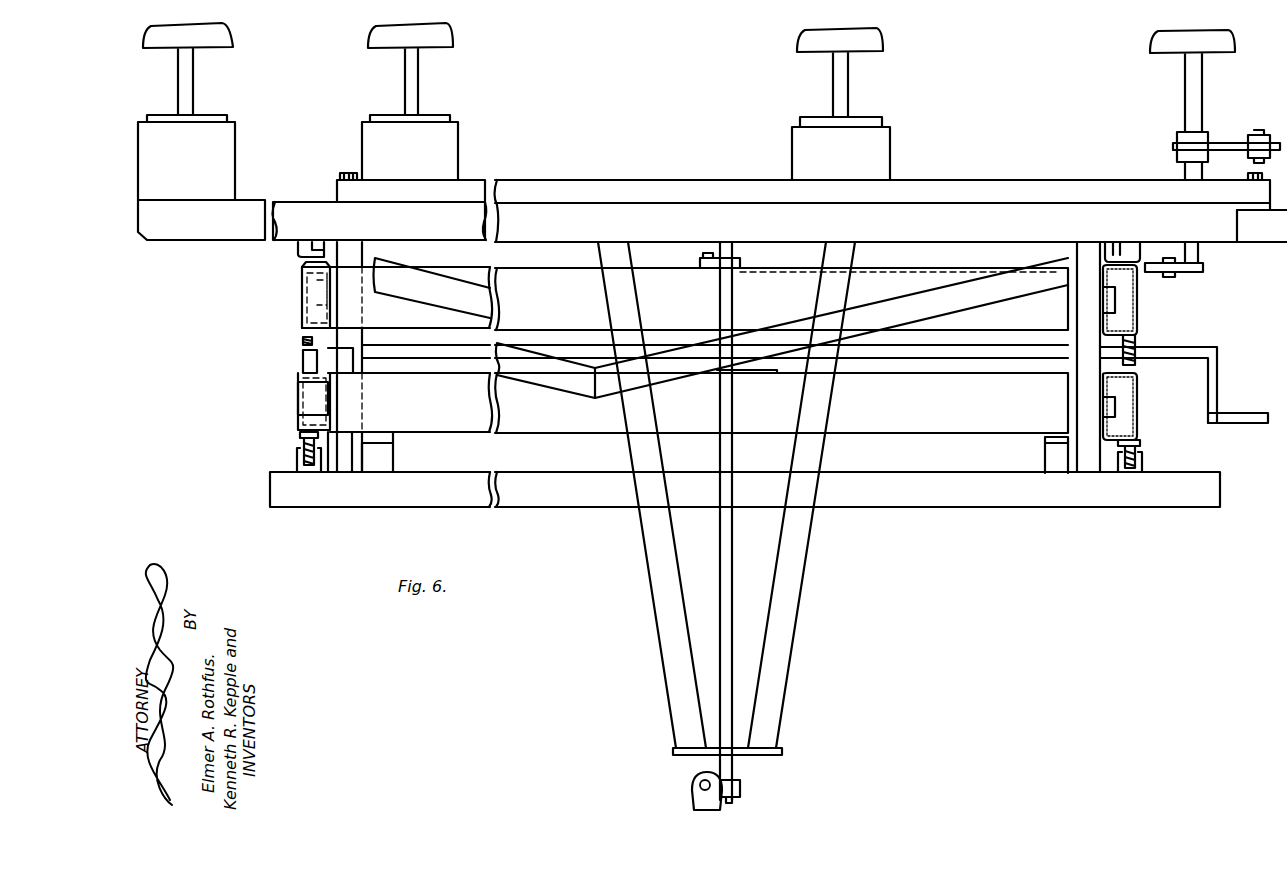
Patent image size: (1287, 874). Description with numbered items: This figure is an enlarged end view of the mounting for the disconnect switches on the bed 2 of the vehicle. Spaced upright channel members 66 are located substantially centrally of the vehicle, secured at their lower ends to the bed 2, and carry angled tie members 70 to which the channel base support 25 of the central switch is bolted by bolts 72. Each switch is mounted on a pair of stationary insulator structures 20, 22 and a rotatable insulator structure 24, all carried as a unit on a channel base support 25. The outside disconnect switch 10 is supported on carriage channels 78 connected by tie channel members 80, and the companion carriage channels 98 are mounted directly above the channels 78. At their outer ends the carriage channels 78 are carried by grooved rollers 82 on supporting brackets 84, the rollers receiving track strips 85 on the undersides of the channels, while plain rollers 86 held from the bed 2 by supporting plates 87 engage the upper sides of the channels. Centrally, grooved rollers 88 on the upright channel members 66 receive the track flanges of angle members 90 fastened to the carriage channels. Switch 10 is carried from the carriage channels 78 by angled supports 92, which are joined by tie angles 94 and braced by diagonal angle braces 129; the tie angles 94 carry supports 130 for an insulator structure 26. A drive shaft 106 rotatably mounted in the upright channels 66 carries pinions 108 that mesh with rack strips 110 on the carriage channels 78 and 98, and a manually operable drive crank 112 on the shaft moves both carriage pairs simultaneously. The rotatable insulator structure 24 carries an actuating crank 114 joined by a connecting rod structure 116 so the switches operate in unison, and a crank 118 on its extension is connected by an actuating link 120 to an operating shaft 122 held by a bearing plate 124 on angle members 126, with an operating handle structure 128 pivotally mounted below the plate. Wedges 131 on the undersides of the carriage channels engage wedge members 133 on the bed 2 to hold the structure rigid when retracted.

The bed 2 is at (276, 487).
The disconnect switch 10 is at (722, 116).
The stationary insulator structure 20 is at (452, 43).
The stationary insulator structure 22 is at (883, 45).
The rotatable insulator structure 24 is at (1234, 46).
The channel base support 25 is at (620, 168).
The insulator structure 26 is at (221, 42).
The upright channel member 66 is at (358, 249).
The angled tie member 70 is at (1010, 218).
The bolt 72 is at (347, 178).
The carriage channel 78 is at (300, 420).
The tie channel member 80 is at (548, 258).
The grooved roller 82 is at (303, 443).
The supporting bracket 84 is at (297, 459).
The track strip 85 is at (302, 436).
The plain roller 86 is at (303, 355).
The supporting plate 87 is at (342, 460).
The grooved roller 88 is at (301, 288).
The angle member 90 is at (302, 266).
The angled support 92 is at (296, 251).
The tie angle 94 is at (306, 190).
The carriage channel 98 is at (302, 316).
The drive shaft 106 is at (912, 352).
The pinion 108 is at (1135, 355).
The rack strip 110 is at (1133, 338).
The drive crank 112 is at (1235, 418).
The actuating crank 114 is at (1218, 146).
The connecting rod structure 116 is at (1278, 129).
The crank 118 is at (1203, 265).
The actuating link 120 is at (930, 258).
The operating shaft 122 is at (721, 304).
The bearing plate 124 is at (747, 757).
The angle member 126 is at (653, 571).
The operating handle structure 128 is at (692, 794).
The angle brace 129 is at (549, 380).
The support 130 is at (225, 147).
The wedge 131 is at (390, 440).
The wedge member 133 is at (386, 457).